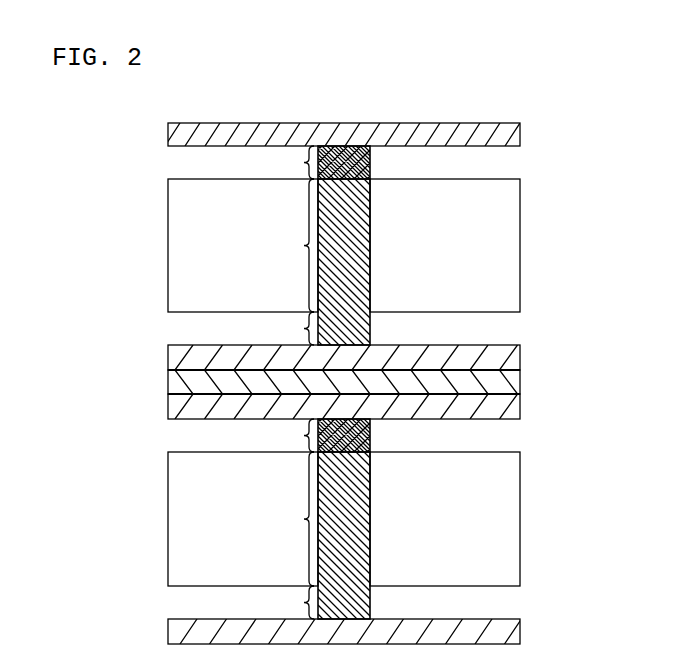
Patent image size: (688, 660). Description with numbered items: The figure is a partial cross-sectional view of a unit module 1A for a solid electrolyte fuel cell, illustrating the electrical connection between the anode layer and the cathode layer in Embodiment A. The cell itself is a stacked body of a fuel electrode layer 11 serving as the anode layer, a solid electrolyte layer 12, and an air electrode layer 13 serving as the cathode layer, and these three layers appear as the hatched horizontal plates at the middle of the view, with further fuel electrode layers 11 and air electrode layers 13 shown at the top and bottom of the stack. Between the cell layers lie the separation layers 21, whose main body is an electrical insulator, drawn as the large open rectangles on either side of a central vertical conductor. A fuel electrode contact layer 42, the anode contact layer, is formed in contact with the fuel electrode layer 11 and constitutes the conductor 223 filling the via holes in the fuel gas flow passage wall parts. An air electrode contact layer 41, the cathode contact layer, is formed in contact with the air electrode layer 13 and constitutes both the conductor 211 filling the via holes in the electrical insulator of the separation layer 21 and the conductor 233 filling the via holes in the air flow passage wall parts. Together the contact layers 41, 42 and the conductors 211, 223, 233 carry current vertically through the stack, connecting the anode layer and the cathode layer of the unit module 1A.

The unit module 1A is at (592, 307).
The fuel electrode layer 11 is at (505, 135).
The solid electrolyte layer 12 is at (505, 383).
The air electrode layer 13 is at (505, 357).
The separation layer 21 is at (505, 221).
The air electrode contact layer 41 is at (355, 260).
The fuel electrode contact layer 42 is at (357, 162).
The conductor 211 is at (291, 382).
The conductor 223 is at (291, 299).
The conductor 233 is at (291, 465).